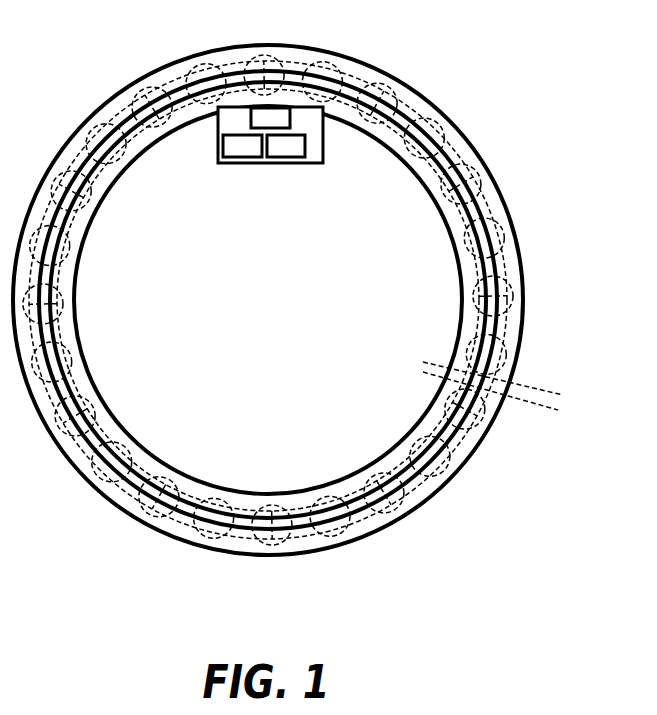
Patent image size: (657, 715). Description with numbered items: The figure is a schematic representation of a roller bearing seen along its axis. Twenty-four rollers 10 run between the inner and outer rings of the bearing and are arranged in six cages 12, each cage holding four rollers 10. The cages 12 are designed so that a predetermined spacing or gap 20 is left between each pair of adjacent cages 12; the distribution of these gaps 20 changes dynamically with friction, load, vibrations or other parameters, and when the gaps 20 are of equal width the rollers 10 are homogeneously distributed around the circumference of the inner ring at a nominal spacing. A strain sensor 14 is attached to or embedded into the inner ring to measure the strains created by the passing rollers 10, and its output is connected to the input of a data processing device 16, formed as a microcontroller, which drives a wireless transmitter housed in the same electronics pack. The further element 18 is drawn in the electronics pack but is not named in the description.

The rollers 10 is at (400, 80).
The cages 12 is at (410, 110).
The strain sensor 14 is at (283, 143).
The data processing device 16 is at (240, 151).
The connector / component 18 is at (277, 115).
The gap 20 is at (557, 389).